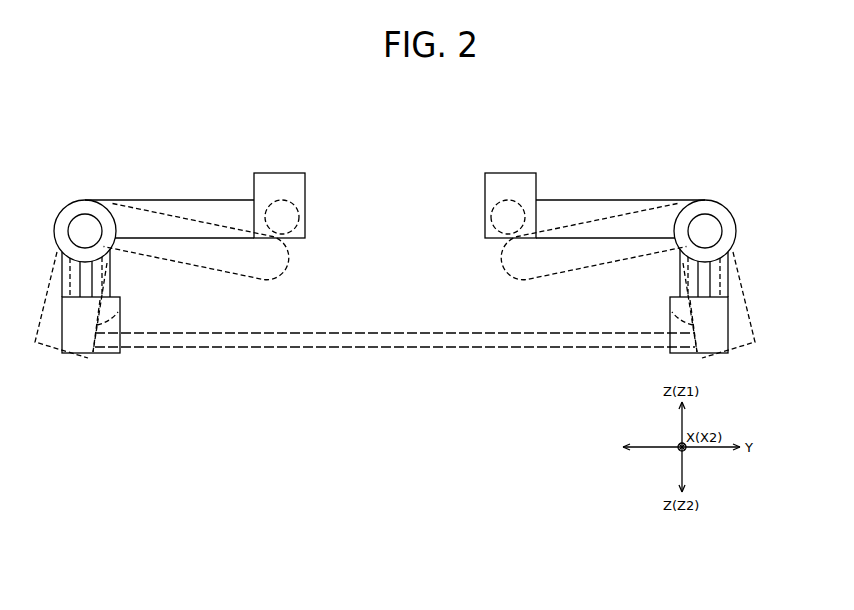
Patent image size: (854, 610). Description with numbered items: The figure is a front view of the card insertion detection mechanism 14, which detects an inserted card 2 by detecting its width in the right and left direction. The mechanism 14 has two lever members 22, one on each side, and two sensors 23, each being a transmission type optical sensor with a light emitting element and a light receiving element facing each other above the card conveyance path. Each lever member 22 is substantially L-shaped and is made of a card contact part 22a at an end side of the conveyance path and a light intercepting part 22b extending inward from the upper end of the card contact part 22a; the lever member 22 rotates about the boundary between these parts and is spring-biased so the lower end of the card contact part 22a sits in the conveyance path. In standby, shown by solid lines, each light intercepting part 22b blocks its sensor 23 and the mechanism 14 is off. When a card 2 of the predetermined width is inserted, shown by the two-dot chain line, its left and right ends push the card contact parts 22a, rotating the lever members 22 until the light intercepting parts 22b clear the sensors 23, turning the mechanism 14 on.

The card 2 is at (418, 333).
The card insertion detection mechanism 14 is at (724, 171).
The lever member 22 is at (120, 200).
The card contact part 22a is at (120, 300).
The light intercepting part 22b is at (168, 217).
The sensor 23 is at (280, 173).